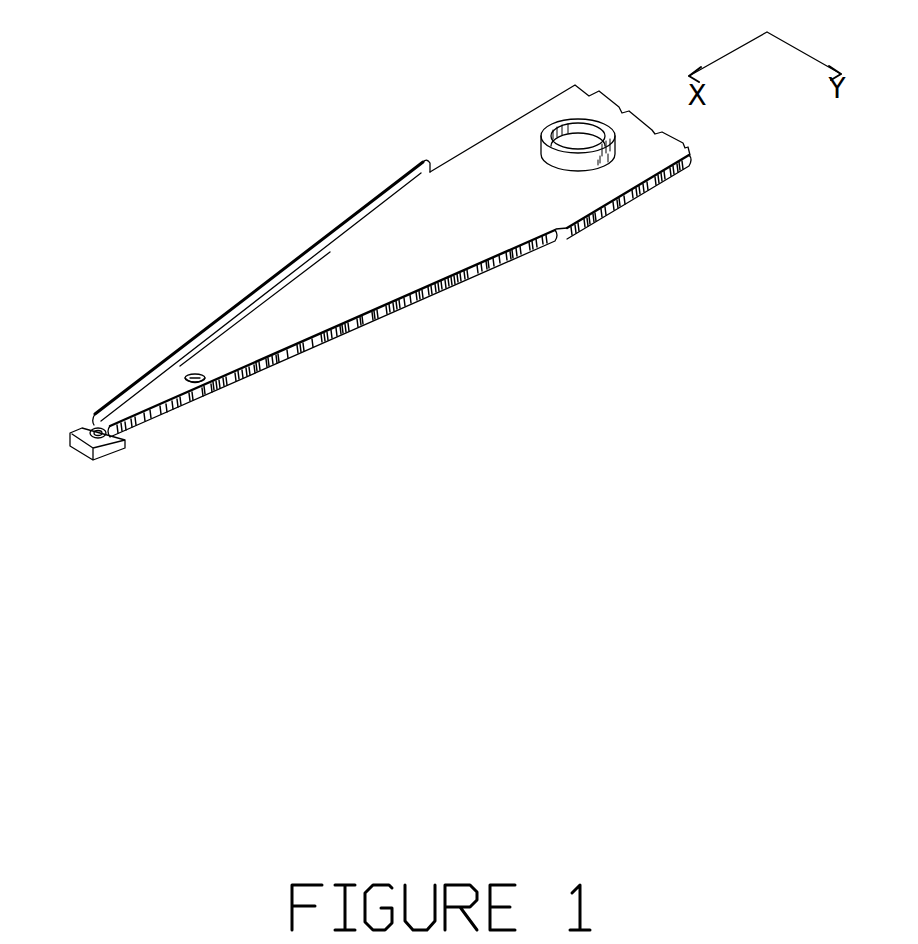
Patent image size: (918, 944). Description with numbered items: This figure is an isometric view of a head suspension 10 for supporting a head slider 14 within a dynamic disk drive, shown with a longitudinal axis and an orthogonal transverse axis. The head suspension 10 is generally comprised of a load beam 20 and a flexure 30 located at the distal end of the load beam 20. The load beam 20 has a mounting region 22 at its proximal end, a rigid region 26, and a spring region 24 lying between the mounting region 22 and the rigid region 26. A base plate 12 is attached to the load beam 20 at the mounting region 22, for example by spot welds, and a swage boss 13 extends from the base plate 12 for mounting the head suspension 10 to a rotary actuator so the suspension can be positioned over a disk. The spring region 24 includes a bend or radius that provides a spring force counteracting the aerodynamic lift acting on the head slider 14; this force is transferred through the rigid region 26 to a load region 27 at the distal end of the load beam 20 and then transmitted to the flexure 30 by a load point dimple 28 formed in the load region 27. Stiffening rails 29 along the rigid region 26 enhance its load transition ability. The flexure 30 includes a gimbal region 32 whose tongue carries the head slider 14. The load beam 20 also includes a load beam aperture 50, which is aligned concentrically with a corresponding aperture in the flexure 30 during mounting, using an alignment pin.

The head suspension 10 is at (477, 116).
The base plate 12 is at (640, 203).
The swage boss 13 is at (600, 125).
The head slider 14 is at (118, 452).
The load beam 20 is at (321, 212).
The mounting region 22 is at (665, 155).
The spring region 24 is at (552, 220).
The rigid region 26 is at (386, 283).
The load region 27 is at (101, 429).
The load point dimple 28 is at (95, 455).
The stiffening rails 29 is at (373, 200).
The flexure 30 is at (57, 438).
The gimbal region 32 is at (76, 430).
The load beam aperture 50 is at (195, 372).